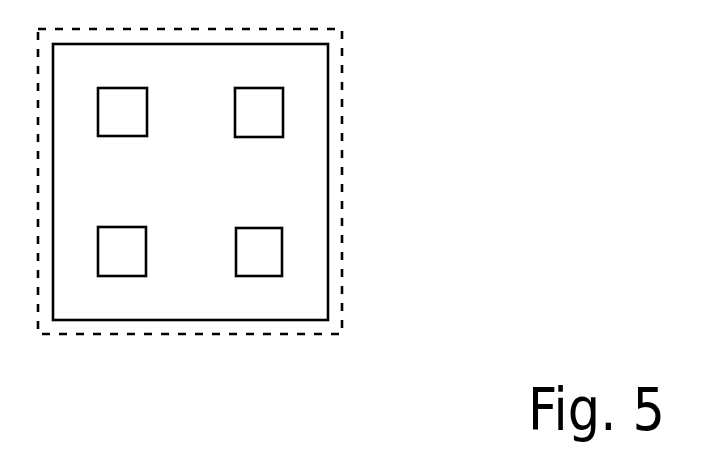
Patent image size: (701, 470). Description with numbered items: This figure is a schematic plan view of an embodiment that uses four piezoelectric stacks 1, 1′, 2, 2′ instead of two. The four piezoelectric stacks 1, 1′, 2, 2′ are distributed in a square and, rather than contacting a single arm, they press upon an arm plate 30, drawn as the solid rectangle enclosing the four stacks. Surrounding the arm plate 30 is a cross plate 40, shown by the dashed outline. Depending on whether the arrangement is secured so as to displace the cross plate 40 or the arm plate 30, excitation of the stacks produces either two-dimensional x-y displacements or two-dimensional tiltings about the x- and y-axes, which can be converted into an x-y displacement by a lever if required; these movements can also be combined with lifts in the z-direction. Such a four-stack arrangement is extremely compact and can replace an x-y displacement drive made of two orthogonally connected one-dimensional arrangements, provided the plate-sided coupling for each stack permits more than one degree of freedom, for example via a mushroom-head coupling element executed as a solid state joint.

The piezoelectric stack 1 is at (130, 103).
The piezoelectric stack 1′ is at (270, 124).
The piezoelectric stack 2 is at (135, 237).
The piezoelectric stack 2′ is at (272, 261).
The arm plate 30 is at (310, 305).
The cross plate 40 is at (293, 333).